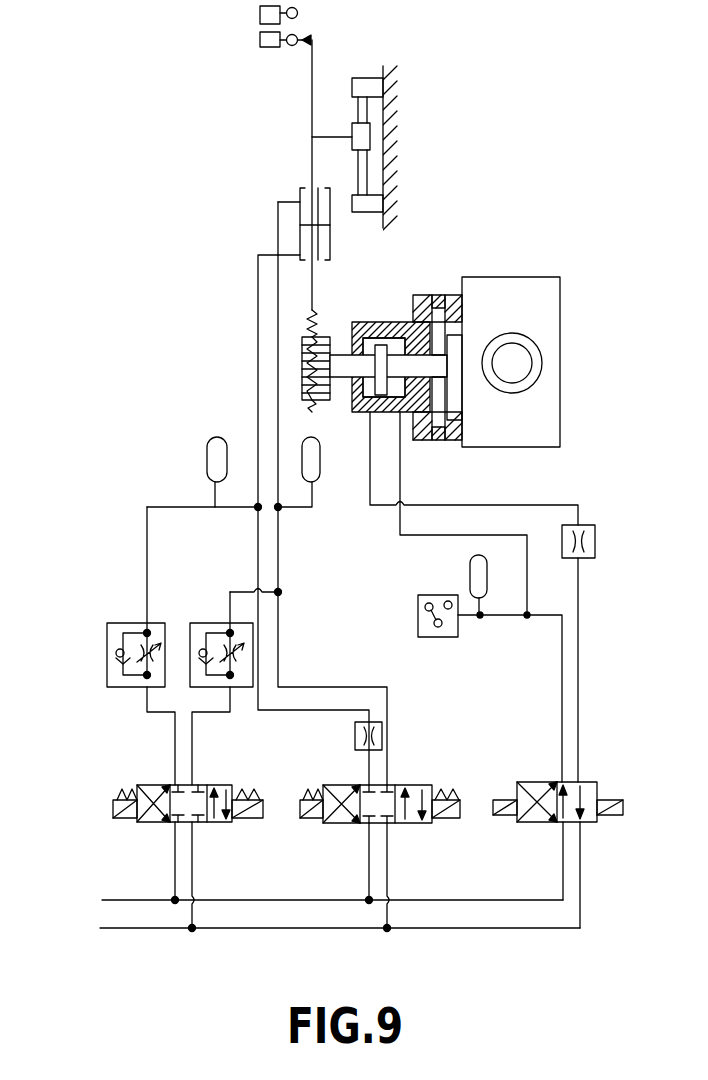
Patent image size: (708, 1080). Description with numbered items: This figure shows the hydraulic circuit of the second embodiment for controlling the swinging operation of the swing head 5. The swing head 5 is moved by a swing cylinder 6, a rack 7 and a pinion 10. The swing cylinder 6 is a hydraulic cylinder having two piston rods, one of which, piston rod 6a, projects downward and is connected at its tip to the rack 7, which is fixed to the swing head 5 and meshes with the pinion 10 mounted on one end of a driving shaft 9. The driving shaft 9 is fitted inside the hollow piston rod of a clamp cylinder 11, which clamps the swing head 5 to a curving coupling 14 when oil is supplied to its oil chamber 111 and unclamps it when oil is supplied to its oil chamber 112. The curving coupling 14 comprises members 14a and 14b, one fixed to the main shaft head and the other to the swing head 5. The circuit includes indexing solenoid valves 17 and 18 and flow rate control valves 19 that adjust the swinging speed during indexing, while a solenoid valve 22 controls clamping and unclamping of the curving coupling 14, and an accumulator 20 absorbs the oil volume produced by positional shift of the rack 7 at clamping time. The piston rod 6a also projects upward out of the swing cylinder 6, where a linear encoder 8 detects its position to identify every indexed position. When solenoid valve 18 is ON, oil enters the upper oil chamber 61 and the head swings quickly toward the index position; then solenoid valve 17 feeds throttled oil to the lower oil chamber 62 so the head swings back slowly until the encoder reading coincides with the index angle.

The swing head 5 is at (548, 294).
The swing cylinder 6 is at (301, 211).
The piston rod 6a is at (311, 152).
The upper oil chamber 61 is at (306, 198).
The lower oil chamber 62 is at (300, 240).
The rack 7 is at (324, 404).
The linear encoder 8 is at (370, 136).
The driving shaft 9 is at (343, 378).
The pinion 10 is at (302, 370).
The clamp cylinder 11 is at (387, 367).
The oil chamber 111 is at (400, 385).
The oil chamber 112 is at (370, 345).
The curving coupling 14 is at (465, 304).
The curving coupling member 14a is at (424, 295).
The curving coupling member 14b is at (450, 295).
The indexing solenoid valve 17 is at (212, 785).
The indexing solenoid valve 18 is at (420, 785).
The flow rate control valve 19 is at (203, 623).
The accumulator 20 is at (207, 456).
The solenoid valve 22 is at (596, 784).